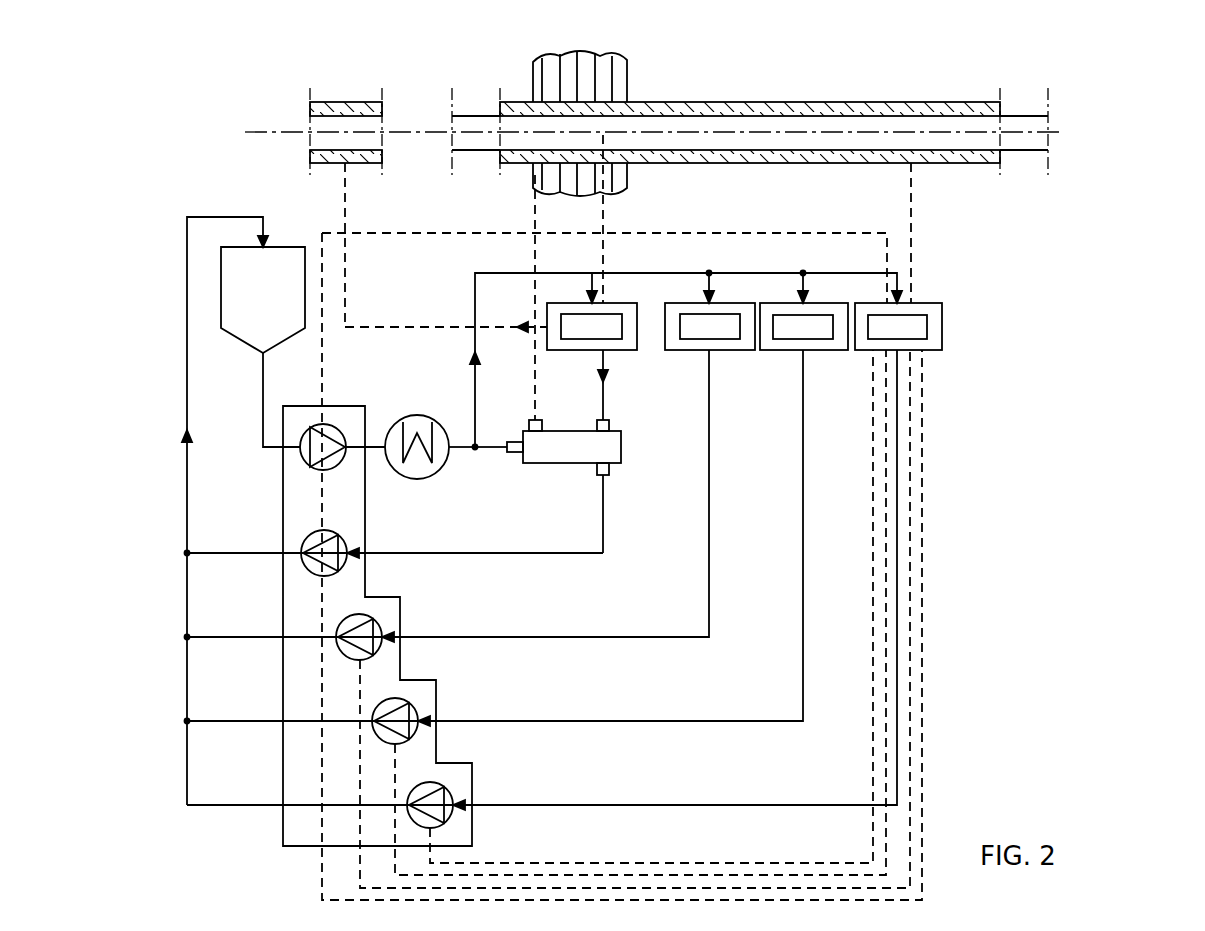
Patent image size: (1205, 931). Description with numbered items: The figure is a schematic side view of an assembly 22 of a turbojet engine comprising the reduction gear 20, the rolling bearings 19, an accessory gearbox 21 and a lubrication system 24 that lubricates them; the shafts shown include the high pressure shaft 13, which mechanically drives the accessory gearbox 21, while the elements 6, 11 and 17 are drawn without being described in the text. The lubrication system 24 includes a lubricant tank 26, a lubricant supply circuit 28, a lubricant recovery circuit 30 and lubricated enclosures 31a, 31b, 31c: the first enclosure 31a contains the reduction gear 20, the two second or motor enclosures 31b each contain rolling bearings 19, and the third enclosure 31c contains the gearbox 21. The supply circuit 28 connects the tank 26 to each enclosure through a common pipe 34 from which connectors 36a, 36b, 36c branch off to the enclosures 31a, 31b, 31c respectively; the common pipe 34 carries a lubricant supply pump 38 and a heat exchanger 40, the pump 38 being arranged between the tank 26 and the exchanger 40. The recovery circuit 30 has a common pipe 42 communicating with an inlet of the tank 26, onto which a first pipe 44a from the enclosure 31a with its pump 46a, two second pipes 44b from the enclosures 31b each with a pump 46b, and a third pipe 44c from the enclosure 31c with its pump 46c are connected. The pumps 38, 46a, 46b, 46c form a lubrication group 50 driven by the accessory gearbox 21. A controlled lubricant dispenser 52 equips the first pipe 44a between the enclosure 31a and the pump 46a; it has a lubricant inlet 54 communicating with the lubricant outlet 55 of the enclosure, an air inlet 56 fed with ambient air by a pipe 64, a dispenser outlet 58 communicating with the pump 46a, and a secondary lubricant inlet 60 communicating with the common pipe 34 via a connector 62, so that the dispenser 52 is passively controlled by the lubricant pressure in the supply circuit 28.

The gear 6 is at (612, 90).
The shaft 11 is at (470, 122).
The high pressure shaft 13 is at (897, 108).
The shaft 17 is at (357, 108).
The rolling bearings 19 is at (728, 337).
The reduction gear 20 is at (615, 333).
The accessory gearbox 21 is at (917, 327).
The assembly 22 is at (182, 121).
The lubrication system 24 is at (268, 825).
The lubricant tank 26 is at (247, 325).
The lubricant supply circuit 28 is at (450, 412).
The lubricant recovery circuit 30 is at (828, 712).
The first lubricated enclosure 31a is at (612, 350).
The second lubricated enclosure 31b is at (750, 352).
The third lubricated enclosure 31c is at (942, 350).
The common pipe 34 is at (258, 412).
The connector 36a is at (588, 288).
The connector 36b is at (800, 290).
The connector 36c is at (905, 283).
The lubricant supply pump 38 is at (333, 465).
The heat exchanger 40 is at (413, 478).
The common pipe 42 is at (187, 240).
The first pipe 44a is at (518, 558).
The second pipe 44b is at (585, 639).
The third pipe 44c is at (605, 806).
The pump 46a is at (345, 567).
The pump 46b is at (376, 652).
The pump 46c is at (447, 821).
The lubrication group 50 is at (282, 573).
The controlled lubricant dispenser 52 is at (563, 460).
The lubricant inlet 54 is at (612, 472).
The lubricant outlet 55 is at (608, 423).
The air inlet 56 is at (530, 422).
The dispenser outlet 58 is at (606, 540).
The secondary lubricant inlet 60 is at (513, 455).
The connector 62 is at (492, 460).
The pipe 64 is at (532, 204).